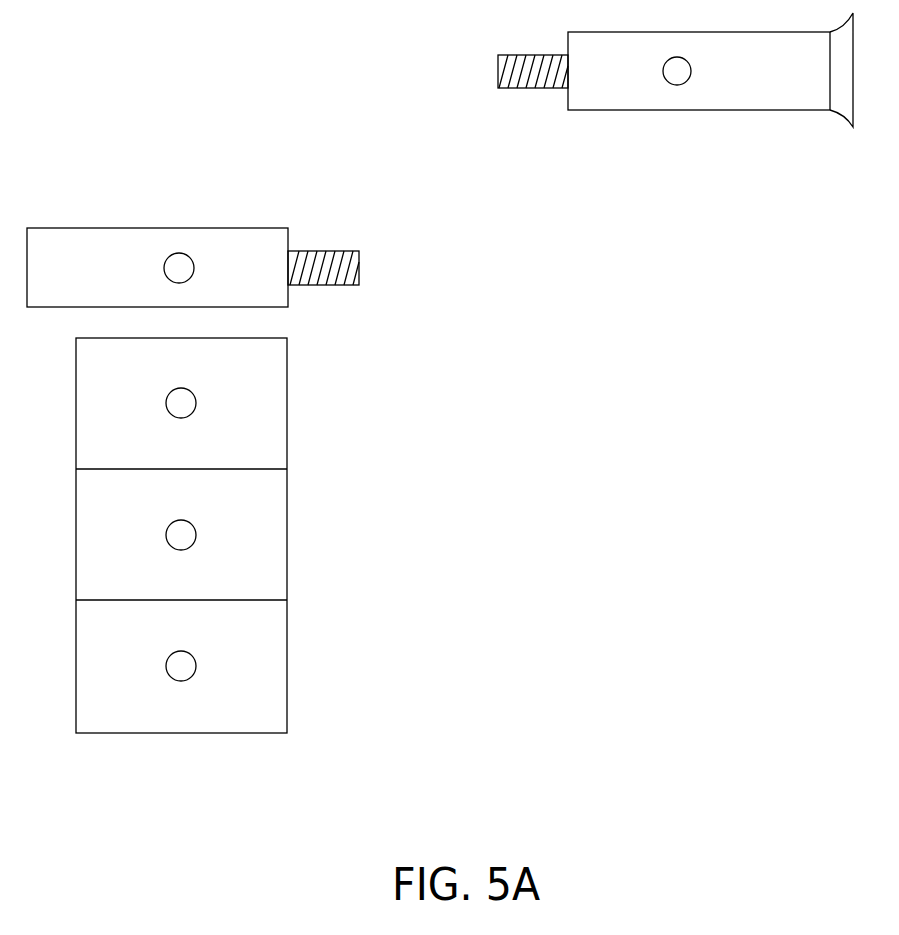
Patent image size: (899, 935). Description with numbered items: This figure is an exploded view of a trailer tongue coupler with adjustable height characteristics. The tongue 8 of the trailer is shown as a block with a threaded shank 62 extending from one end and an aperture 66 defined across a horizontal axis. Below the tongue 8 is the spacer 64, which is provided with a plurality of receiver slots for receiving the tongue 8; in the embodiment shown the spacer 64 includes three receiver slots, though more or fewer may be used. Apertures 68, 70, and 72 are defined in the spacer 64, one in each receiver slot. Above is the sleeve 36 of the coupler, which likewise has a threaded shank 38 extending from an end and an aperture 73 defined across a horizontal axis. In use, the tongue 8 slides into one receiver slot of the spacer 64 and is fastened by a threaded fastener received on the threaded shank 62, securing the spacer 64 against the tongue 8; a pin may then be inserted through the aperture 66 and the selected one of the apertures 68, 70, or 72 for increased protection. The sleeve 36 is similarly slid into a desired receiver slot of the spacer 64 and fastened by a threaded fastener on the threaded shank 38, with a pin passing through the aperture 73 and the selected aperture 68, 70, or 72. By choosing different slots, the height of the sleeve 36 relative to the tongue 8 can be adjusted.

The tongue 8 is at (88, 247).
The sleeve 36 is at (757, 90).
The threaded shank 38 is at (497, 67).
The threaded shank 62 is at (362, 262).
The spacer 64 is at (272, 688).
The aperture 66 is at (180, 262).
The aperture 68 is at (178, 404).
The aperture 70 is at (195, 532).
The aperture 72 is at (195, 662).
The aperture 73 is at (663, 76).